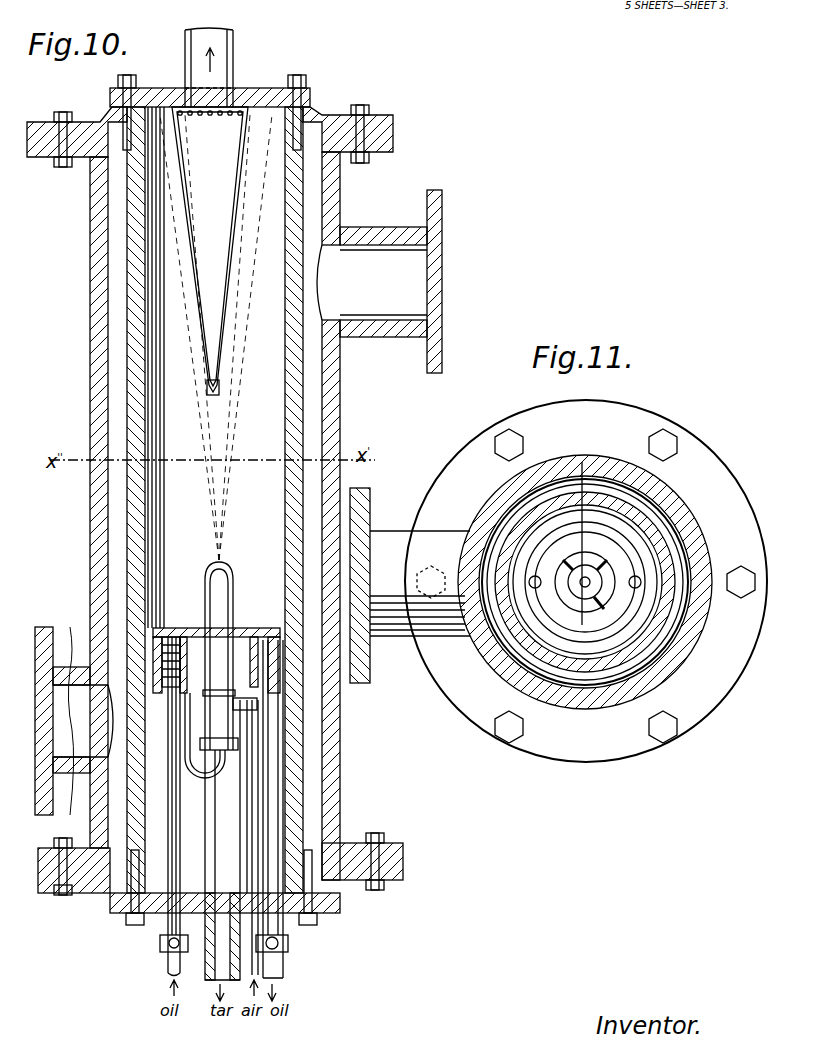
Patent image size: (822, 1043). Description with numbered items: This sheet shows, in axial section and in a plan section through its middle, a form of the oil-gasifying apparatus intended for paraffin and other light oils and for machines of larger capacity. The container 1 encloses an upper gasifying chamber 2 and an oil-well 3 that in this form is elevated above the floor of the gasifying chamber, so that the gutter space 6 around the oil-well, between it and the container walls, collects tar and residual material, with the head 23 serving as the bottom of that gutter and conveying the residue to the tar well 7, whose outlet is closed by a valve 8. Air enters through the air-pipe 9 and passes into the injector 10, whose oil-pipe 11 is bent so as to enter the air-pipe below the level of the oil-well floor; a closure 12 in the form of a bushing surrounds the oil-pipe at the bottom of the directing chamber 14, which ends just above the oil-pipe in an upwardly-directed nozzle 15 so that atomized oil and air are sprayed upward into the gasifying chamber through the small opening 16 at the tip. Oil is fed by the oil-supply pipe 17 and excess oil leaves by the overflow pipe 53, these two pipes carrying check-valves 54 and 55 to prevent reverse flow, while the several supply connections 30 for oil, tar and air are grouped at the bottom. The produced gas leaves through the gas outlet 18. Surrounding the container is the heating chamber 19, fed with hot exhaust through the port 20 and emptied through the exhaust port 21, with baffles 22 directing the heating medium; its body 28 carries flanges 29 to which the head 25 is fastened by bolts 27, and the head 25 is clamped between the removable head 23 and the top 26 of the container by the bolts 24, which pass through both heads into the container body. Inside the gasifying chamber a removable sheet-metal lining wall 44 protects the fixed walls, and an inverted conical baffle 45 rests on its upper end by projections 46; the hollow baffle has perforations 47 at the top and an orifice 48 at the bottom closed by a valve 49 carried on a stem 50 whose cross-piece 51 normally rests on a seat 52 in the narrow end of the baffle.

In FIG. 10, the container 1 is at (330, 425).
In FIG. 11, the container 1 is at (702, 624).
In FIG. 10, the gasifying chamber 2 is at (215, 500).
In FIG. 11, the gasifying chamber 2 is at (664, 628).
In FIG. 11, the oil-well 3 is at (575, 435).
In FIG. 10, the gutter 6 is at (153, 632).
In FIG. 11, the gutter 6 is at (366, 701).
In FIG. 10, the tar well 7 is at (205, 830).
In FIG. 10, the valve 8 is at (174, 647).
In FIG. 10, the air-pipe 9 is at (248, 820).
In FIG. 10, the injector 10 is at (246, 594).
In FIG. 11, the injector 10 is at (585, 532).
In FIG. 10, the oil-pipe 11 is at (236, 612).
In FIG. 11, the oil-pipe 11 is at (598, 535).
In FIG. 10, the closure 12 is at (224, 770).
In FIG. 11, the closure 12 is at (525, 582).
In FIG. 10, the directing chamber 14 is at (205, 615).
In FIG. 10, the nozzle 15 is at (222, 560).
In FIG. 11, the nozzle 15 is at (570, 598).
In FIG. 11, the burner opening 16 is at (588, 605).
In FIG. 10, the oil-supply pipe 17 is at (168, 960).
In FIG. 10, the gas outlet 18 is at (240, 52).
In FIG. 10, the heating chamber 19 is at (340, 745).
In FIG. 10, the port 20 is at (379, 281).
In FIG. 10, the exhaust port 21 is at (74, 721).
In FIG. 11, the exhaust port 21 is at (450, 576).
In FIG. 10, the baffles 22 is at (60, 845).
In FIG. 11, the baffles 22 is at (748, 578).
In FIG. 10, the removable head 23 is at (315, 97).
In FIG. 10, the bolts 24 is at (118, 78).
In FIG. 10, the head 25 is at (393, 125).
In FIG. 10, the top 26 is at (122, 158).
In FIG. 10, the bolts 27 is at (63, 112).
In FIG. 10, the body 28 is at (90, 360).
In FIG. 10, the flange 29 is at (395, 148).
In FIG. 11, the flange 29 is at (717, 692).
In FIG. 10, the supply pipes 30 is at (210, 980).
In FIG. 10, the lining wall 44 is at (335, 363).
In FIG. 11, the lining wall 44 is at (592, 665).
In FIG. 10, the baffle 45 is at (210, 251).
In FIG. 10, the projections 46 is at (258, 118).
In FIG. 10, the perforations 47 is at (210, 118).
In FIG. 10, the orifice 48 is at (207, 388).
In FIG. 10, the valve 49 is at (213, 395).
In FIG. 10, the stem 50 is at (219, 384).
In FIG. 10, the cross-piece 51 is at (207, 380).
In FIG. 10, the seat 52 is at (219, 392).
In FIG. 10, the oil overflow pipe 53 is at (283, 968).
In FIG. 10, the check-valve 54 is at (160, 946).
In FIG. 10, the check-valve 55 is at (288, 944).